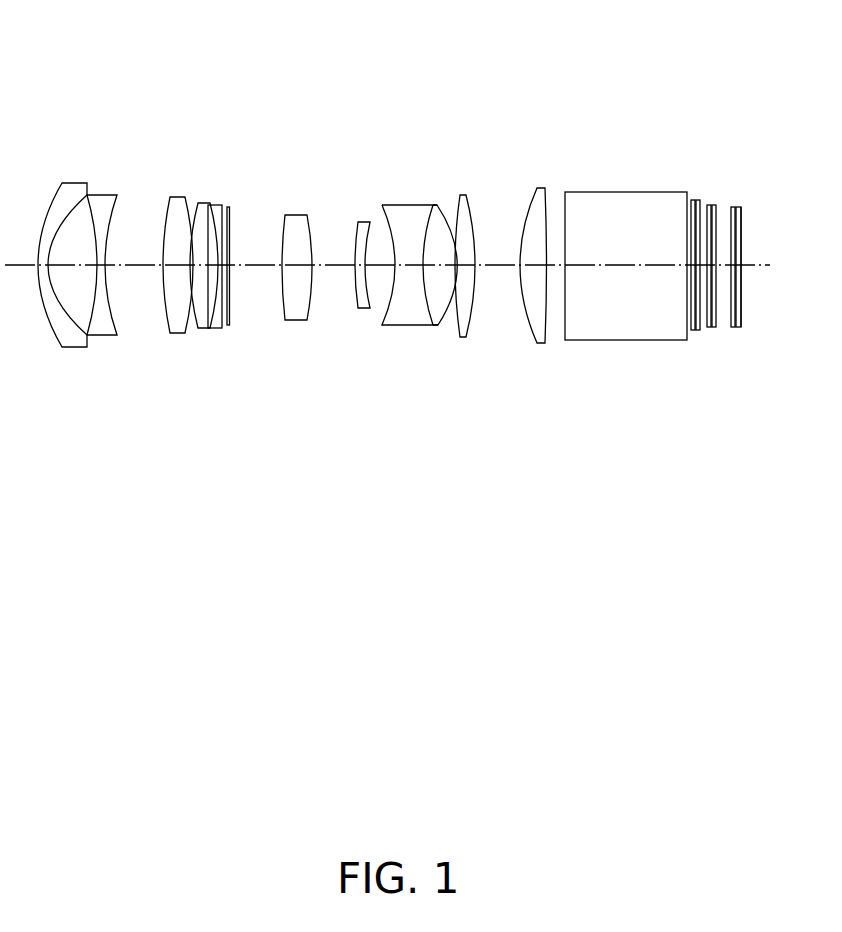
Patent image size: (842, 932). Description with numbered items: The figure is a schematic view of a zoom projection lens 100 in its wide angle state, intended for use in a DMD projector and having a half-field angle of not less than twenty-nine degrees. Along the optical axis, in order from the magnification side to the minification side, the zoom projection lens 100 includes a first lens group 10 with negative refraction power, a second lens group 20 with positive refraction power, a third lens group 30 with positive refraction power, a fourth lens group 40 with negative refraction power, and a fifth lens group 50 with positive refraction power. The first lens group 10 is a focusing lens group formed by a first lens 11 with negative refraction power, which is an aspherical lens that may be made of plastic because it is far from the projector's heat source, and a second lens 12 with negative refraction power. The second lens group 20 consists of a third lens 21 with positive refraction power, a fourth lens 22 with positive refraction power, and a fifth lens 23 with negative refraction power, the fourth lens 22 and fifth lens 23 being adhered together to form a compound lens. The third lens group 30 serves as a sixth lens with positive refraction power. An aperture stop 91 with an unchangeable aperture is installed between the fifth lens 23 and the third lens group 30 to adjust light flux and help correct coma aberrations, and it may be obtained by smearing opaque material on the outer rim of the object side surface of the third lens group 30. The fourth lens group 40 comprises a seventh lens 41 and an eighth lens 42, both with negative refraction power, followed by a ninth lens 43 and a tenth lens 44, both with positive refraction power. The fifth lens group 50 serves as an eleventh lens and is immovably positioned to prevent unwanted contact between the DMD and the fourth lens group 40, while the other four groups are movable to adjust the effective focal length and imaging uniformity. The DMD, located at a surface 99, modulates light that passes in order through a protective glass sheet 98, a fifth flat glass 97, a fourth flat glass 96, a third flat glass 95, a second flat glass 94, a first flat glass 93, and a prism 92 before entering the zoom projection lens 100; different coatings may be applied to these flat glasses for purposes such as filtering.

The zoom projection lens 100 is at (144, 67).
The first lens group 10 is at (122, 127).
The first lens 11 is at (73, 182).
The second lens 12 is at (108, 197).
The second lens group 20 is at (242, 137).
The third lens 21 is at (177, 197).
The fourth lens 22 is at (205, 200).
The fifth lens 23 is at (218, 203).
The third lens group 30 is at (293, 213).
The fourth lens group 40 is at (348, 130).
The seventh lens 41 is at (363, 222).
The eighth lens 42 is at (402, 203).
The ninth lens 43 is at (435, 205).
The tenth lens 44 is at (463, 193).
The fifth lens group 50 is at (538, 188).
The aperture stop 91 is at (228, 305).
The prism 92 is at (627, 192).
The first flat glass 93 is at (693, 200).
The second flat glass 94 is at (699, 200).
The third flat glass 95 is at (710, 330).
The fourth flat glass 96 is at (713, 330).
The fifth flat glass 97 is at (732, 207).
The protective glass sheet 98 is at (738, 207).
The surface 99 is at (742, 237).